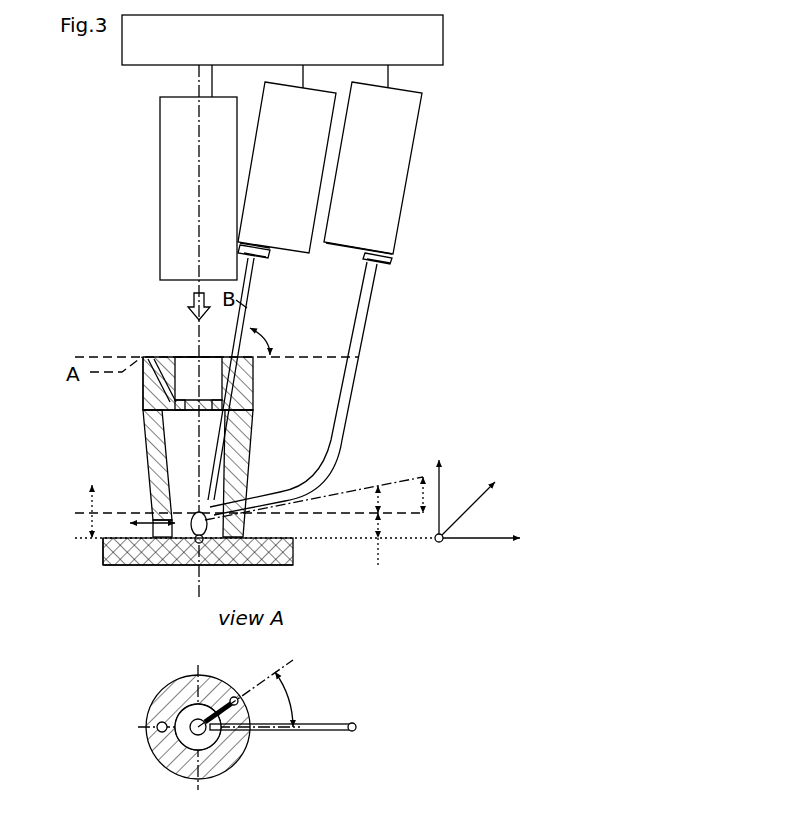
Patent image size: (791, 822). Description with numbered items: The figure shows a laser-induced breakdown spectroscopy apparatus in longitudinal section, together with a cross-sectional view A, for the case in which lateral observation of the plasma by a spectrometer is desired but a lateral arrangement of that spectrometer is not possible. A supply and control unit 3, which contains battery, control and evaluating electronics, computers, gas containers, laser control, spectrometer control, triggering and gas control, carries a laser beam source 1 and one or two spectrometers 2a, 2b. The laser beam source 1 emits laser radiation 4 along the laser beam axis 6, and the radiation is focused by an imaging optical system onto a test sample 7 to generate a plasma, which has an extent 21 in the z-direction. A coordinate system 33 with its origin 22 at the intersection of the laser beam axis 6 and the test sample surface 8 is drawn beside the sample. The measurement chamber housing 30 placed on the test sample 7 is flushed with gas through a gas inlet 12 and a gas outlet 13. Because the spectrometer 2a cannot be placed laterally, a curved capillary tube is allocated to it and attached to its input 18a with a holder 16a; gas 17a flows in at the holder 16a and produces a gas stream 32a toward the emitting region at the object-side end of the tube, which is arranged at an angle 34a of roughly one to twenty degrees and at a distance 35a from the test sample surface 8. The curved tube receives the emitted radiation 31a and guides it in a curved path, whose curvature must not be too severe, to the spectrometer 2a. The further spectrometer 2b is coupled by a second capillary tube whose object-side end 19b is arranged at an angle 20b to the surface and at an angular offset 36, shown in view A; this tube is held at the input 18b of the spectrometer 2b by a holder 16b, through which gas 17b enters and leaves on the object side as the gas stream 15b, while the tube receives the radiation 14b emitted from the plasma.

The laser beam source 1 is at (169, 172).
The spectrometer 2a is at (407, 159).
The spectrometer 2b is at (364, 159).
The supply and control unit 3 is at (300, 40).
The laser radiation 4 is at (140, 297).
The laser beam axis 6 is at (129, 468).
The test sample 7 is at (181, 572).
The test sample surface 8 is at (225, 550).
The gas inlet 12 is at (102, 366).
The gas outlet 13 is at (107, 502).
The radiation emitted from the plasma 14b is at (325, 451).
The gas stream 15b is at (323, 469).
The holder 16a is at (435, 269).
The holder 16b is at (284, 290).
The gas 17a is at (433, 248).
The gas 17b is at (281, 275).
The input of the spectrometer 18a is at (415, 228).
The input of the spectrometer 18b is at (372, 206).
The object-side end of the capillary tube 19b is at (263, 379).
The angle 20b is at (273, 338).
The extent of the plasma 21 is at (118, 525).
The origin 22 is at (115, 573).
The housing 30 is at (255, 378).
The emitted radiation 31a is at (283, 559).
The gas stream 32a is at (281, 557).
The coordinate system 33 is at (484, 517).
The angle 34a is at (401, 495).
The distance 35a is at (399, 540).
The angular offset 36 is at (314, 699).